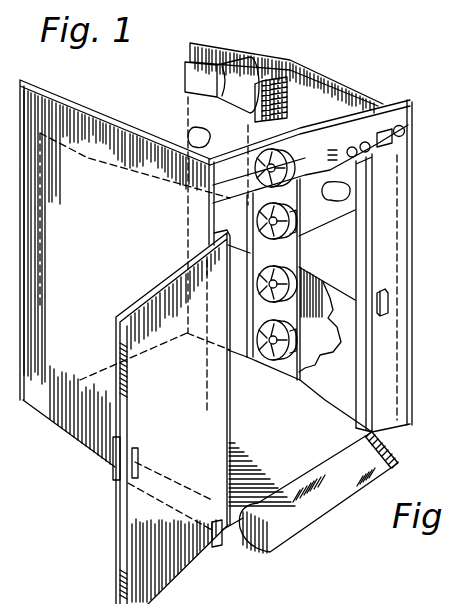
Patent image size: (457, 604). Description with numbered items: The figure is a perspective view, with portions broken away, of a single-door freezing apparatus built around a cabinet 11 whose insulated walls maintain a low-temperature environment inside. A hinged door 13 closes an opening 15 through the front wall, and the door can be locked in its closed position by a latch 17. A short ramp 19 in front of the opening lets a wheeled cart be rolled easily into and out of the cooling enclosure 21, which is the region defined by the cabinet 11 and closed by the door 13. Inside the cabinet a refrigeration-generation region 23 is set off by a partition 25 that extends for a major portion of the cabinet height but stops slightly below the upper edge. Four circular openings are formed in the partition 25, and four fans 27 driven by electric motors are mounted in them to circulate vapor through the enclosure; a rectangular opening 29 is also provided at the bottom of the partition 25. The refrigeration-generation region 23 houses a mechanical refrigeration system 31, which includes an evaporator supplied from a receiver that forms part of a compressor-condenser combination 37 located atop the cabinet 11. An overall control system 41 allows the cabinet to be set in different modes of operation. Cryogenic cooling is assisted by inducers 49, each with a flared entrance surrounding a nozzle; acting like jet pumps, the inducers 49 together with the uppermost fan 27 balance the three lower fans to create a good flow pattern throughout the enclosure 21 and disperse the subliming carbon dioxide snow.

The cabinet 11 is at (344, 70).
The hinged door 13 is at (176, 416).
The opening 15 is at (217, 541).
The latch 17 is at (110, 473).
The ramp 19 is at (303, 507).
The cooling enclosure 21 is at (265, 414).
The refrigeration-generation region 23 is at (370, 210).
The partition 25 is at (291, 264).
The fans 27 is at (303, 212).
The rectangular opening 29 is at (313, 398).
The mechanical refrigeration system 31 is at (244, 90).
The compressor-condenser combination 37 is at (253, 80).
The control system 41 is at (364, 133).
The inducer 49 is at (185, 130).